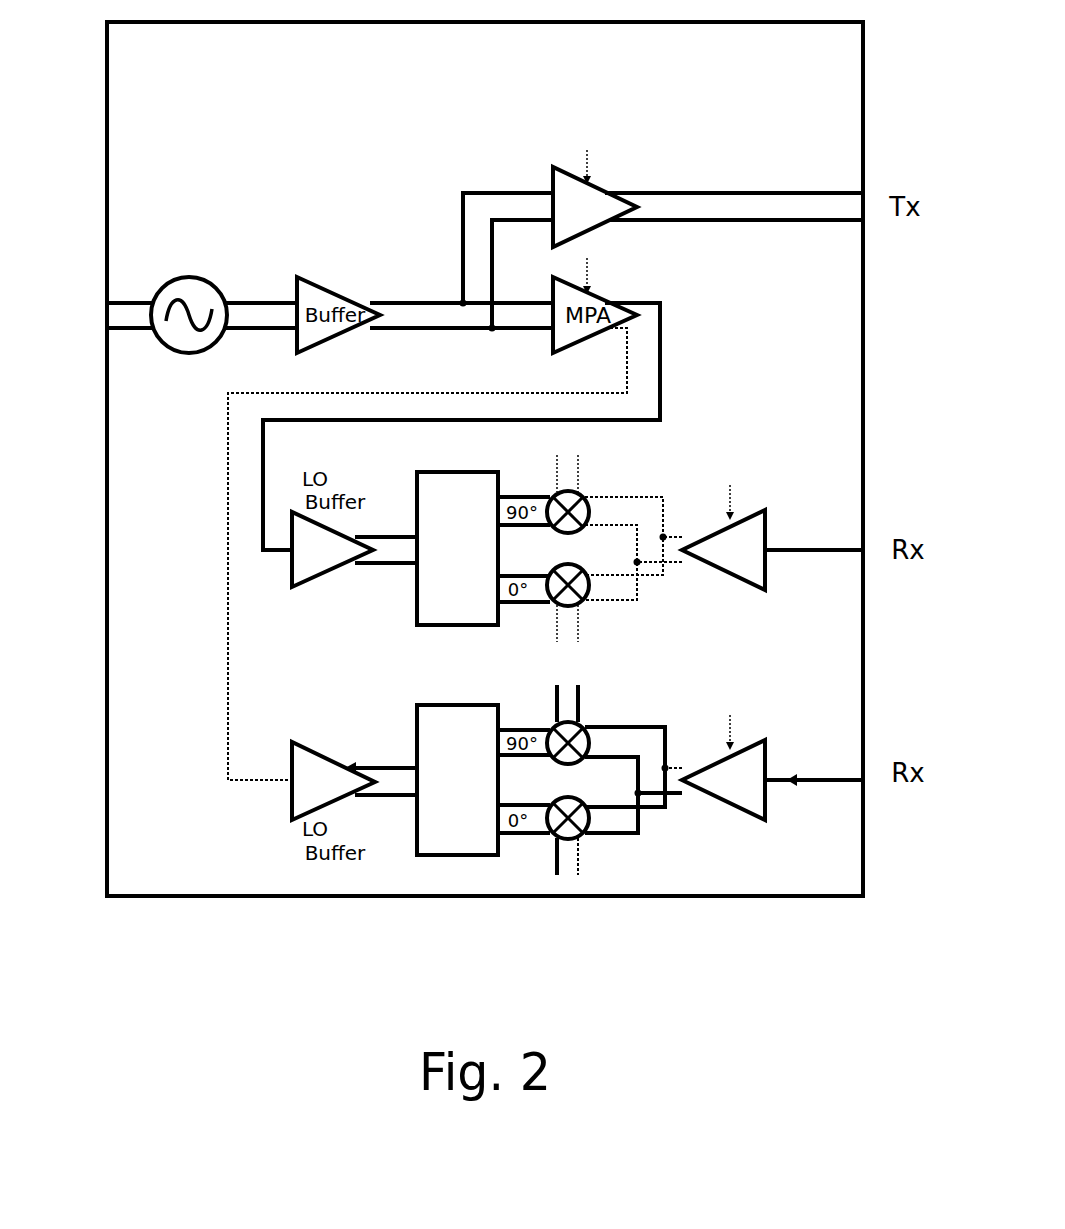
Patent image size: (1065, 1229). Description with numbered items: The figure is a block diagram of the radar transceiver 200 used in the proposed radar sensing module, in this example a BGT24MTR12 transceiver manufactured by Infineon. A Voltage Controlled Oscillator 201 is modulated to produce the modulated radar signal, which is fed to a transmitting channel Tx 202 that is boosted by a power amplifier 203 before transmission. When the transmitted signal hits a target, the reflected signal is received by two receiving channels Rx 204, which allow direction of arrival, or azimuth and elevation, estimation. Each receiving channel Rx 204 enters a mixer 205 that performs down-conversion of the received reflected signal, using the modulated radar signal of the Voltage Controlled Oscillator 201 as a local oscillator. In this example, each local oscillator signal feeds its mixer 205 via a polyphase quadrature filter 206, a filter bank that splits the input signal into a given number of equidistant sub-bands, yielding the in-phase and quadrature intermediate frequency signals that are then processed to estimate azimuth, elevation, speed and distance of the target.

The transceiver circuit 200 is at (118, 858).
The Voltage Controlled Oscillator 201 is at (177, 277).
The transmitting channel Tx 202 is at (793, 203).
The power amplifier 203 is at (567, 192).
The receiving channel Rx 204 is at (793, 550).
The mixer 205 is at (555, 567).
The polyphase quadrature filter 206 is at (420, 602).